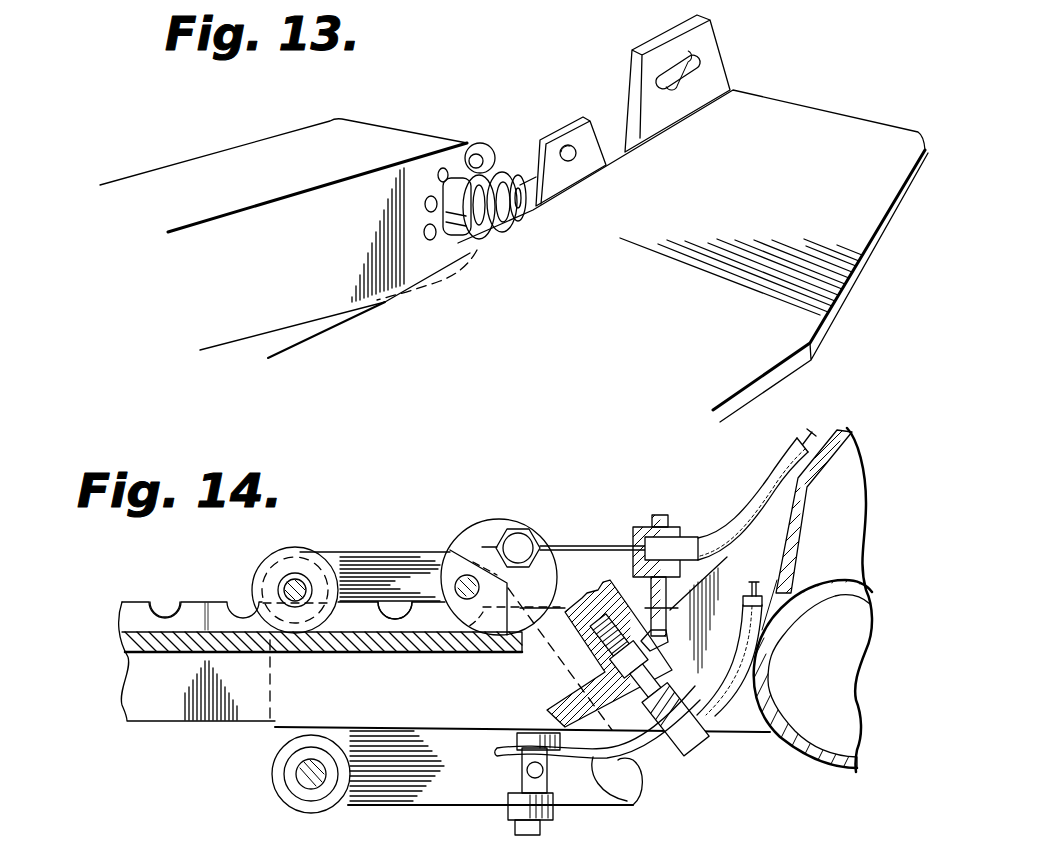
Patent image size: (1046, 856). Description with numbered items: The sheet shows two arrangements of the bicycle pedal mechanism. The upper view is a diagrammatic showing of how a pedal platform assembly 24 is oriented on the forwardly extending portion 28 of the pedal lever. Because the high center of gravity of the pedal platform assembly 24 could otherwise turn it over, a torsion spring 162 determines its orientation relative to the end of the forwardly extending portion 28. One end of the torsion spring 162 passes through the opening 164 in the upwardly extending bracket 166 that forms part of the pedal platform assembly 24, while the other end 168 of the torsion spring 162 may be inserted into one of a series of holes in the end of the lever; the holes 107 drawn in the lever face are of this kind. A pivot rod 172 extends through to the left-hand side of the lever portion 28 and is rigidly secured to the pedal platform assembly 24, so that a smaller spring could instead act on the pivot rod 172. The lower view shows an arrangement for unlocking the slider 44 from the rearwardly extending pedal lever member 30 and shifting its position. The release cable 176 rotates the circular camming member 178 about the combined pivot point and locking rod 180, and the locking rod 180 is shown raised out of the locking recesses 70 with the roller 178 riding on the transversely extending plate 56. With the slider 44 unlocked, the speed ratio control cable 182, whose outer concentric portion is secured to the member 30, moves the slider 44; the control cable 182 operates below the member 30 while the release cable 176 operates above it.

In FIG. 13, the pedal platform assembly 24 is at (803, 157).
In FIG. 13, the forwardly extending portion of the pedal lever 28 is at (190, 174).
In FIG. 14, the rearwardly extending pedal lever member 30 is at (168, 692).
In FIG. 14, the slider 44 is at (430, 768).
In FIG. 14, the transversely extending plate 56 is at (302, 642).
In FIG. 14, the locking recesses 70 is at (157, 608).
In FIG. 13, the mounting holes 107 is at (472, 148).
In FIG. 13, the torsion spring 162 is at (504, 226).
In FIG. 13, the opening 164 is at (568, 143).
In FIG. 13, the upwardly extending bracket 166 is at (557, 177).
In FIG. 13, the other end of the torsion spring 168 is at (484, 153).
In FIG. 13, the pivot rod 172 is at (460, 236).
In FIG. 14, the release cable 176 is at (594, 545).
In FIG. 14, the circular camming member 178 is at (480, 530).
In FIG. 14, the combined pivot point and locking rod 180 is at (456, 588).
In FIG. 14, the speed ratio control cable 182 is at (590, 758).